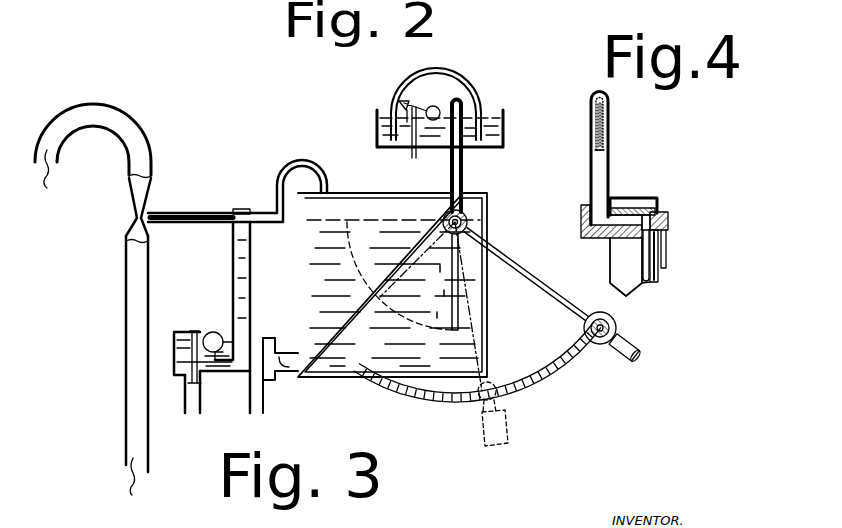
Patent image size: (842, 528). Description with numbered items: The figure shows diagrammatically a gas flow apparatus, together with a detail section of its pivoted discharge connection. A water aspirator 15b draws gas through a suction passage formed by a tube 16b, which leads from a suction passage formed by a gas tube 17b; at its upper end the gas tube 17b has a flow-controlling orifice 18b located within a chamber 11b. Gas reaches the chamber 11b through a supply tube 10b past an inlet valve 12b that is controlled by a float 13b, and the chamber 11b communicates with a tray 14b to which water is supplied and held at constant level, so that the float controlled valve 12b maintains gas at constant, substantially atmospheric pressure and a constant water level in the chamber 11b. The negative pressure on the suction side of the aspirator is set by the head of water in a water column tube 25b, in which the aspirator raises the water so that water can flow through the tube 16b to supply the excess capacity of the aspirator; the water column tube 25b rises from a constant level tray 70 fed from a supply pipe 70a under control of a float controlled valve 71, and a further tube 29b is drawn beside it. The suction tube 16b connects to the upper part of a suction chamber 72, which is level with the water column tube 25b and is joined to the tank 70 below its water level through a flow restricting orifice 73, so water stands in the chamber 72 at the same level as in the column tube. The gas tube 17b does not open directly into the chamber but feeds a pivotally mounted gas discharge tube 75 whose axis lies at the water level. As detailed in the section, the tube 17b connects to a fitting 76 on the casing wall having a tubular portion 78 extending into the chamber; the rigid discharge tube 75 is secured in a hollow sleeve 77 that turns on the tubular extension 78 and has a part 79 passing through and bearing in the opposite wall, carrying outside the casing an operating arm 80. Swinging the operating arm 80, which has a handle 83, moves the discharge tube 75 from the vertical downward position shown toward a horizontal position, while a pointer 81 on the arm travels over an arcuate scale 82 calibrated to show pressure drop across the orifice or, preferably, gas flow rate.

In FIG. 3, the supply tube 10b is at (410, 152).
In FIG. 3, the chamber 11b is at (468, 105).
In FIG. 3, the inlet valve 12b is at (406, 101).
In FIG. 3, the float 13b is at (434, 106).
In FIG. 3, the tray 14b is at (504, 123).
In FIG. 3, the water aspirator 15b is at (136, 218).
In FIG. 3, the suction tube 16b is at (183, 213).
In FIG. 3, the gas tube 17b is at (465, 176).
In FIG. 4, the gas tube 17b is at (596, 163).
In FIG. 3, the flow-controlling orifice 18b is at (457, 94).
In FIG. 3, the water column tube 25b is at (240, 279).
In FIG. 3, the discharge tube 29b is at (129, 382).
In FIG. 3, the constant level tray 70 is at (174, 348).
In FIG. 3, the supply pipe 70a is at (188, 412).
In FIG. 3, the float controlled valve 71 is at (198, 384).
In FIG. 3, the suction chamber 72 is at (383, 205).
In FIG. 3, the flow restricting orifice 73 is at (272, 352).
In FIG. 3, the gas discharge tube 75 is at (460, 284).
In FIG. 4, the gas discharge tube 75 is at (647, 279).
In FIG. 4, the fitting 76 is at (580, 212).
In FIG. 4, the hollow sleeve 77 is at (622, 206).
In FIG. 4, the tubular portion 78 is at (631, 240).
In FIG. 4, the part 79 is at (668, 220).
In FIG. 3, the operating arm 80 is at (545, 279).
In FIG. 4, the operating arm 80 is at (666, 255).
In FIG. 3, the pointer 81 is at (605, 342).
In FIG. 3, the arcuate scale 82 is at (538, 383).
In FIG. 3, the handle 83 is at (629, 347).